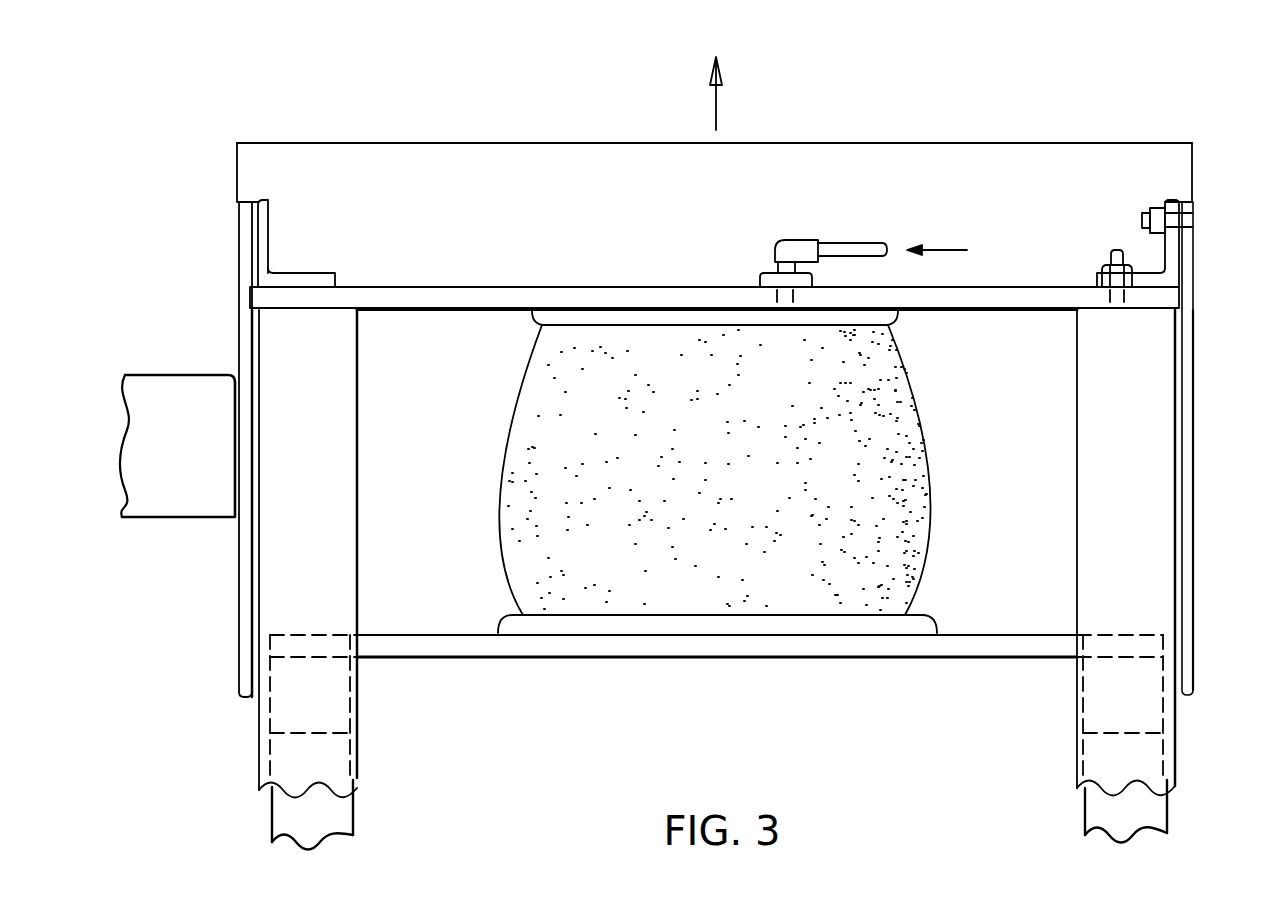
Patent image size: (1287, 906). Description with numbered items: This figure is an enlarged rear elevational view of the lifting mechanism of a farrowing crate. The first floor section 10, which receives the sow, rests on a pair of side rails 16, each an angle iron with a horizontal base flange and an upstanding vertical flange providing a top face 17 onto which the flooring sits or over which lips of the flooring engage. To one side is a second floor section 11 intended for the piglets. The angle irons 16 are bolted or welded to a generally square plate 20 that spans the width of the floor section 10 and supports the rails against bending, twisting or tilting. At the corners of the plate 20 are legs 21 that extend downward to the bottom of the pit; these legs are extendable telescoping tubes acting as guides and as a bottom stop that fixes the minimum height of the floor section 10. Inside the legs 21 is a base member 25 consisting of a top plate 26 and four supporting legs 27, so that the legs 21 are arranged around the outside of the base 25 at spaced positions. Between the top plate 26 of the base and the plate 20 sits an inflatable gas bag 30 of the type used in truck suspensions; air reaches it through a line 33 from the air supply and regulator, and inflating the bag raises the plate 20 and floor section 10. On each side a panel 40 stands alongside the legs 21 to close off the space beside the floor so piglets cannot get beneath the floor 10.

The first floor section 10 is at (535, 142).
The second floor section 11 is at (177, 421).
The side rail 16 is at (268, 273).
The top face 17 is at (258, 197).
The plate 20 is at (480, 302).
The leg 21 is at (338, 537).
The base member 25 is at (402, 633).
The top plate 26 is at (983, 632).
The supporting leg 27 is at (335, 815).
The inflatable gas bag 30 is at (535, 418).
The line 33 is at (848, 243).
The panel 40 is at (238, 588).